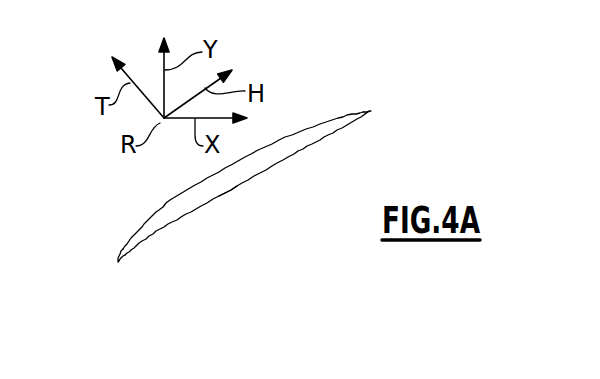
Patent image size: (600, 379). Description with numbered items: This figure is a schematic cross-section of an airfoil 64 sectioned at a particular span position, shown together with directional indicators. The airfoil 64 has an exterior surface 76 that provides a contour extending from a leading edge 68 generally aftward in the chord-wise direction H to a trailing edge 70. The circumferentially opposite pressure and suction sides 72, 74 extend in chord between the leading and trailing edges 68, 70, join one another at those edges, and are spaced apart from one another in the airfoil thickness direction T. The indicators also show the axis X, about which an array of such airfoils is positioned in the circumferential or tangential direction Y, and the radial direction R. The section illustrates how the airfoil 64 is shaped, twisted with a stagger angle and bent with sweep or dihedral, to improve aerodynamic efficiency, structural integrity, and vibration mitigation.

The airfoil 64 is at (250, 184).
The leading edge 68 is at (119, 263).
The trailing edge 70 is at (367, 112).
The pressure side 72 is at (195, 217).
The suction side 74 is at (195, 190).
The exterior surface 76 is at (232, 198).